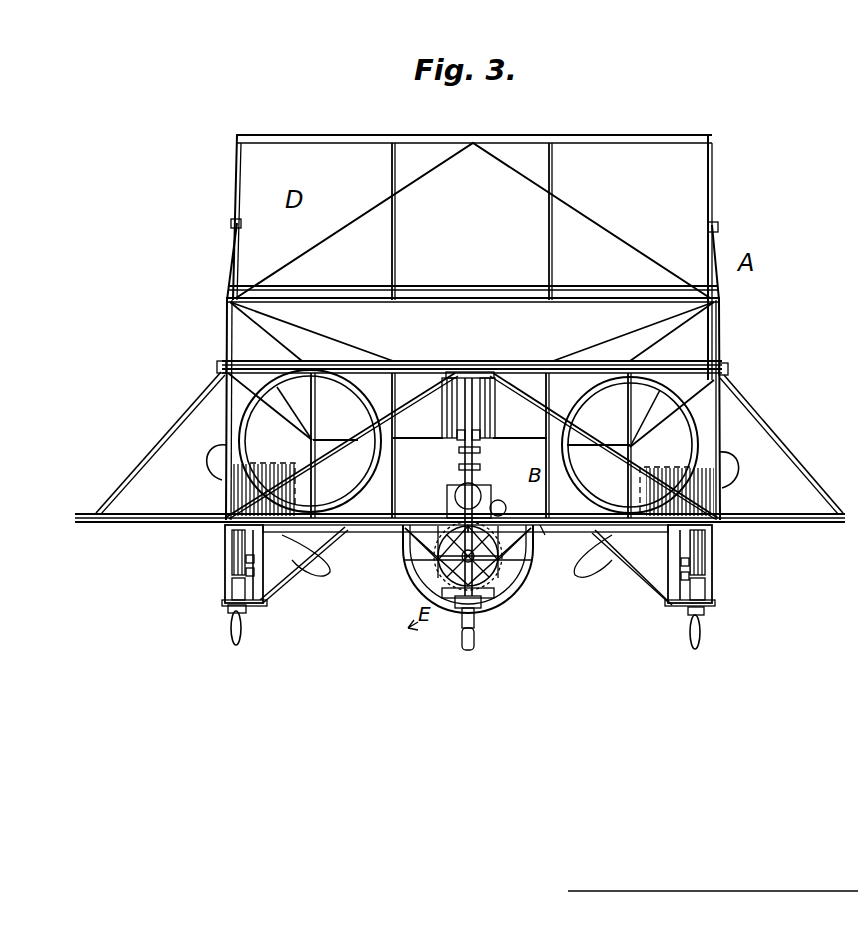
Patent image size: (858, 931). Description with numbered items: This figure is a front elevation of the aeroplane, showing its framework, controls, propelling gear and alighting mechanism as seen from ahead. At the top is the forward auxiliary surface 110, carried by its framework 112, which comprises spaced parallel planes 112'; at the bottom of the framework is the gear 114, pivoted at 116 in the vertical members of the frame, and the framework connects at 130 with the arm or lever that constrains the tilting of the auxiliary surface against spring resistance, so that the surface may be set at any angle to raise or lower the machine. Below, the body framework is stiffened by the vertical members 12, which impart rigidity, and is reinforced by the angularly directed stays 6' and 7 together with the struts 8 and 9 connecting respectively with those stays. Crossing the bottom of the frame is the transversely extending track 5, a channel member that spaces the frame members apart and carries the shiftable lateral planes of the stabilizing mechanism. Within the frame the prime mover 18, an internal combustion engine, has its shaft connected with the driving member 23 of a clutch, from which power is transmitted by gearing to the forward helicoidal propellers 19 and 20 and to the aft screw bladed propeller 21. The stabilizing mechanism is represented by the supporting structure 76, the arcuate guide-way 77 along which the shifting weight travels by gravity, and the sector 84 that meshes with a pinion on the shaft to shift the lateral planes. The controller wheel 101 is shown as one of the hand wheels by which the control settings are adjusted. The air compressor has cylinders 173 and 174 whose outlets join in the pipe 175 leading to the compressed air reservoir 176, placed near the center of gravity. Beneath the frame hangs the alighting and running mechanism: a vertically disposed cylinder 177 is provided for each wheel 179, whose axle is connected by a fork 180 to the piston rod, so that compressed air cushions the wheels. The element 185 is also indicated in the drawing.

The auxiliary surface 110 is at (580, 138).
The framework 112 is at (499, 327).
The spaced parallel planes 112' is at (473, 205).
The connection with the framework 130 is at (231, 224).
The pivot 116 is at (228, 299).
The gear 114 is at (227, 330).
The vertical members 12 is at (226, 420).
The track 5 is at (124, 524).
The strut 8 is at (313, 407).
The strut 9 is at (469, 431).
The stay 6' is at (344, 461).
The stay 7 is at (612, 455).
The cylinder 173 is at (451, 371).
The cylinder 174 is at (500, 371).
The wheel 101 is at (459, 466).
The prime mover 18 is at (447, 496).
The pipe 175 is at (498, 498).
The supporting structure 76 is at (425, 585).
The sector 84 is at (500, 585).
The arcuate guide-way 77 is at (486, 612).
The fork 180 is at (458, 622).
The wheel 179 is at (474, 646).
The cylinder 177 is at (232, 548).
The hook 185 is at (648, 566).
The helicoidal propeller 19 is at (350, 526).
The helicoidal propeller 20 is at (580, 526).
The driving member of clutch 23 is at (328, 576).
The screw bladed propeller 21 is at (608, 580).
The compressed air reservoir 176 is at (522, 530).